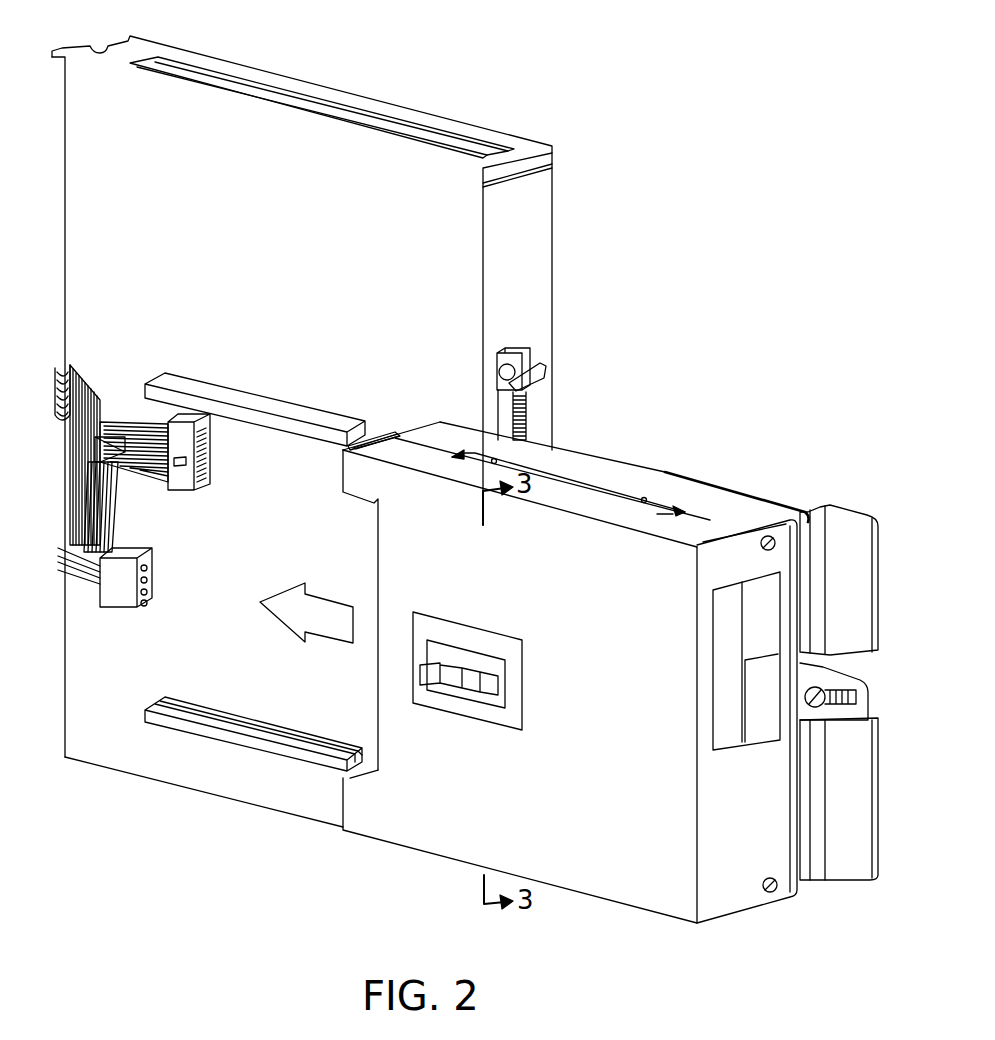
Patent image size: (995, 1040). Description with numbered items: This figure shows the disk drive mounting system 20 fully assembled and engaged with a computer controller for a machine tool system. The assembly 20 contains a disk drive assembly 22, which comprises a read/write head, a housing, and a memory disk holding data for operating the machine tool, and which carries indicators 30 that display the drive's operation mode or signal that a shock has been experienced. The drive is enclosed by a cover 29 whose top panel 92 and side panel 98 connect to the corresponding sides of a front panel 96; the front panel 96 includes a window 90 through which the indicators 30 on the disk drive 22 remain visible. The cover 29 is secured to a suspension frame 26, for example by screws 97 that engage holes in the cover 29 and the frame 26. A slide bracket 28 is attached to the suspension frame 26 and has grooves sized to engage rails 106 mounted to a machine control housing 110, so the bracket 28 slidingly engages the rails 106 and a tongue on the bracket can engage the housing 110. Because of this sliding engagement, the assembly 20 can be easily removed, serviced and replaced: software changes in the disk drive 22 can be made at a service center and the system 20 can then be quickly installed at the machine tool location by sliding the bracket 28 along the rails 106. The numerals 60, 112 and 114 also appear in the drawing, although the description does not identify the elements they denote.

The disk drive mounting system 20 is at (750, 461).
The disk drive assembly 22 is at (480, 653).
The suspension frame 26 is at (576, 651).
The slide bracket 28 is at (861, 527).
The cover 29 is at (376, 826).
The indicators 30 is at (450, 684).
The cover 60 is at (556, 458).
The window 90 is at (514, 672).
The top panel 92 is at (418, 448).
The front panel 96 is at (648, 732).
The screws 97 is at (771, 536).
The side panel 98 is at (765, 820).
The rails 106 is at (282, 412).
The machine control housing 110 is at (457, 289).
The connector 112 is at (120, 595).
The thumbscrew 114 is at (858, 697).